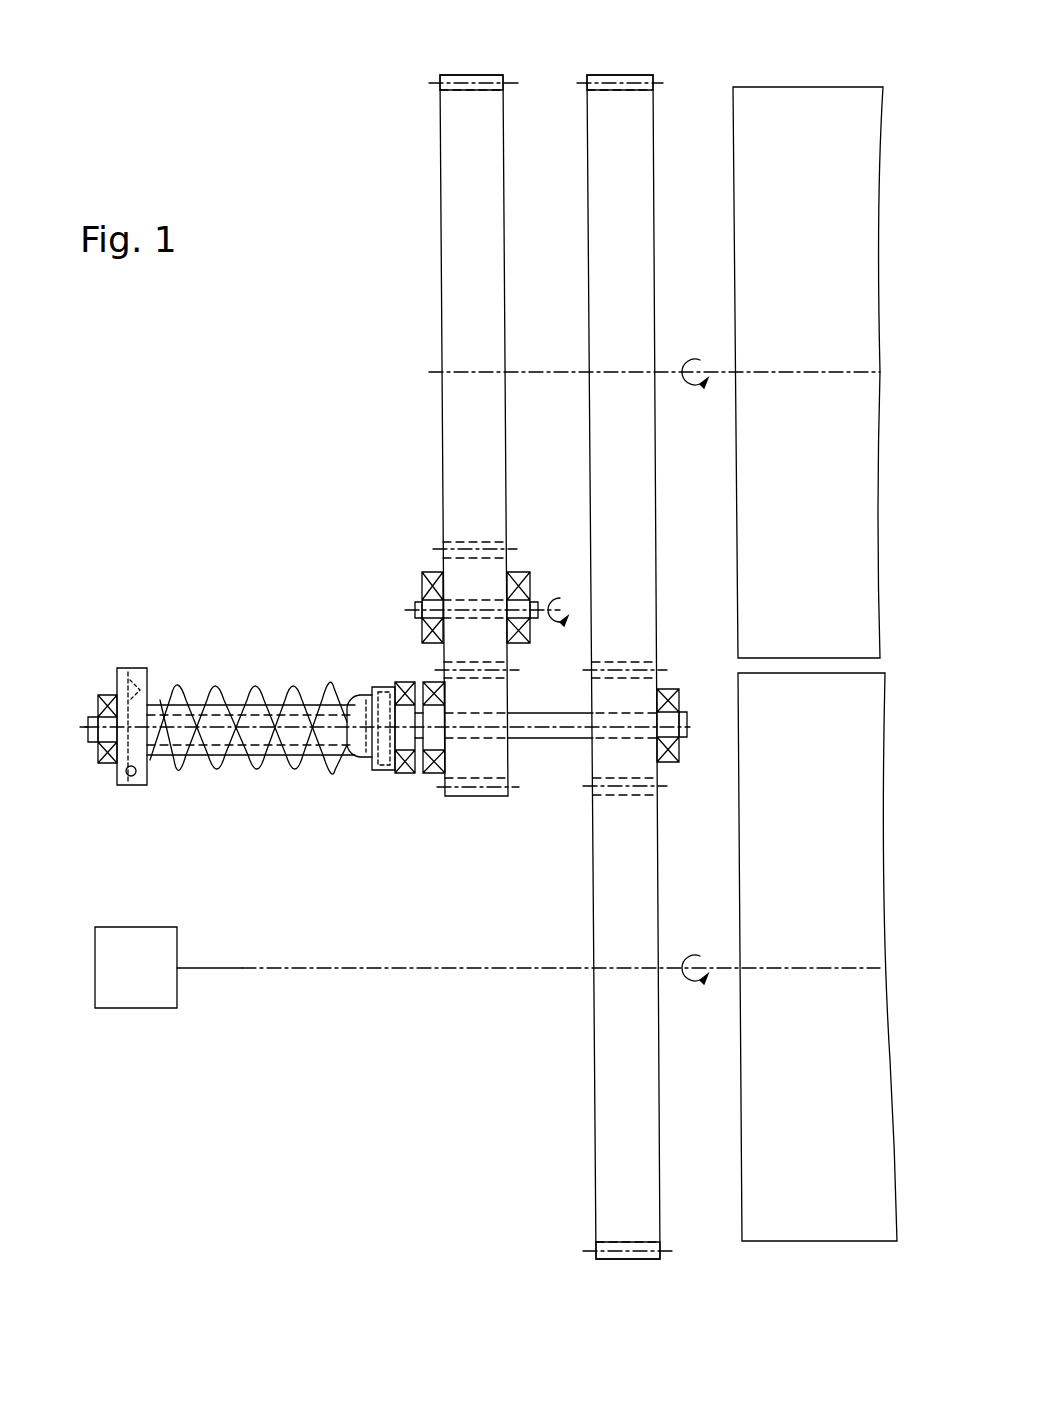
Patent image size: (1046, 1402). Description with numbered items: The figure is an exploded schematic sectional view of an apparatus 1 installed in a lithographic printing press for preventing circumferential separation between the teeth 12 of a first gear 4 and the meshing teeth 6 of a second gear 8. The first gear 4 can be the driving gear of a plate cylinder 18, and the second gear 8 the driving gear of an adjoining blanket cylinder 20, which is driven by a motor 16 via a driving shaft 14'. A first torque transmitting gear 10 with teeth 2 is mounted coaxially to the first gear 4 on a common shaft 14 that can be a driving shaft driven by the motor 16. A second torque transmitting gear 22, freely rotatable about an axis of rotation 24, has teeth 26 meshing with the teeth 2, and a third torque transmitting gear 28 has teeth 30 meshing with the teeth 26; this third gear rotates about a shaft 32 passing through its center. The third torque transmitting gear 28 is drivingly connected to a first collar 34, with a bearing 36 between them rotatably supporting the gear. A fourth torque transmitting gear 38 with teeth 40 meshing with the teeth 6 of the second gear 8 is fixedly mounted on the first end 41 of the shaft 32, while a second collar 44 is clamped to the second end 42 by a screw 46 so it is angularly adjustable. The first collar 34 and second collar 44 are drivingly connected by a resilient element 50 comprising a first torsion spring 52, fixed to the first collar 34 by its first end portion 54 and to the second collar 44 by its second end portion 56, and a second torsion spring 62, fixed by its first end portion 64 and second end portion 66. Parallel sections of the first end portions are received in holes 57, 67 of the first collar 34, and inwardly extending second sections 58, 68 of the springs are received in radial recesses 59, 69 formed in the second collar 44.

The apparatus 1 is at (292, 98).
The teeth of first torque transmitting gear 2 is at (487, 78).
The first gear 4 is at (655, 115).
The teeth of second gear 6 is at (635, 1262).
The second gear 8 is at (662, 1203).
The first torque transmitting gear 10 is at (440, 130).
The teeth of first gear 12 is at (625, 80).
The common shaft 14 is at (654, 340).
The driving shaft 14' is at (528, 994).
The motor 16 is at (134, 993).
The plate cylinder 18 is at (806, 110).
The blanket cylinder 20 is at (810, 1222).
The second torque transmitting gear 22 is at (458, 575).
The axis of rotation 24 is at (412, 608).
The teeth of second torque transmitting gear 26 is at (458, 540).
The third torque transmitting gear 28 is at (495, 700).
The teeth of third torque transmitting gear 30 is at (497, 798).
The shaft 32 is at (573, 732).
The first collar 34 is at (385, 772).
The bearing 36 is at (405, 776).
The fourth torque transmitting gear 38 is at (650, 765).
The teeth of fourth torque transmitting gear 40 is at (645, 795).
The first end of shaft 41 is at (686, 722).
The second end of shaft 42 is at (88, 732).
The second collar 44 is at (118, 670).
The screw 46 is at (115, 780).
The resilient element 50 is at (268, 668).
The first torsion spring 52 is at (215, 690).
The first end portion of first torsion spring 54 is at (345, 765).
The second end portion of first torsion spring 56 is at (160, 770).
The hole 57 is at (372, 775).
The second section of first torsion spring 58 is at (152, 778).
The radial recess 59 is at (128, 777).
The second torsion spring 62 is at (215, 775).
The first end portion of second torsion spring 64 is at (355, 695).
The second end portion of second torsion spring 66 is at (153, 690).
The hole 67 is at (372, 695).
The second section of second torsion spring 68 is at (115, 690).
The radial recess 69 is at (138, 676).